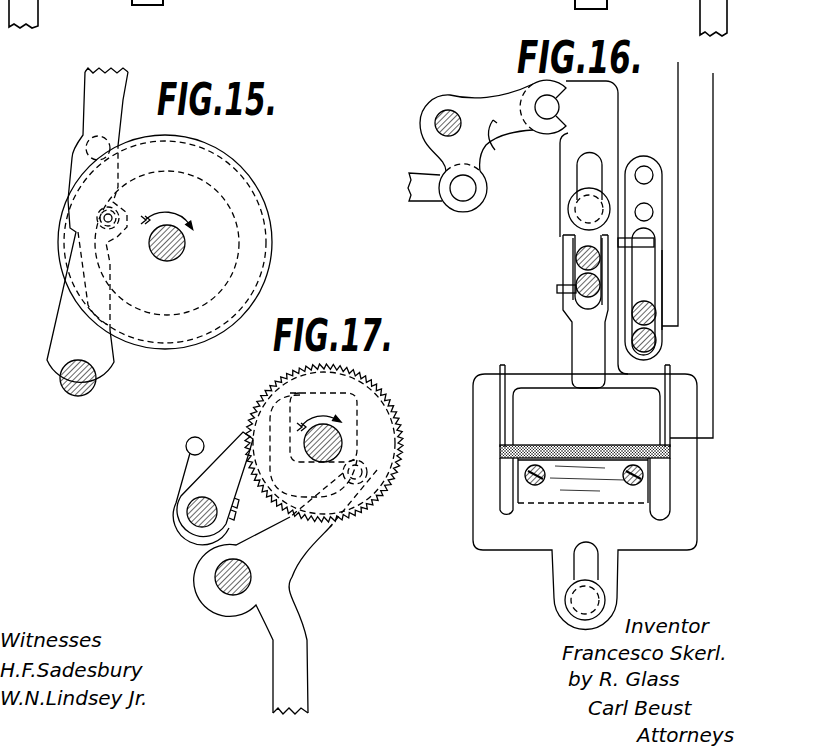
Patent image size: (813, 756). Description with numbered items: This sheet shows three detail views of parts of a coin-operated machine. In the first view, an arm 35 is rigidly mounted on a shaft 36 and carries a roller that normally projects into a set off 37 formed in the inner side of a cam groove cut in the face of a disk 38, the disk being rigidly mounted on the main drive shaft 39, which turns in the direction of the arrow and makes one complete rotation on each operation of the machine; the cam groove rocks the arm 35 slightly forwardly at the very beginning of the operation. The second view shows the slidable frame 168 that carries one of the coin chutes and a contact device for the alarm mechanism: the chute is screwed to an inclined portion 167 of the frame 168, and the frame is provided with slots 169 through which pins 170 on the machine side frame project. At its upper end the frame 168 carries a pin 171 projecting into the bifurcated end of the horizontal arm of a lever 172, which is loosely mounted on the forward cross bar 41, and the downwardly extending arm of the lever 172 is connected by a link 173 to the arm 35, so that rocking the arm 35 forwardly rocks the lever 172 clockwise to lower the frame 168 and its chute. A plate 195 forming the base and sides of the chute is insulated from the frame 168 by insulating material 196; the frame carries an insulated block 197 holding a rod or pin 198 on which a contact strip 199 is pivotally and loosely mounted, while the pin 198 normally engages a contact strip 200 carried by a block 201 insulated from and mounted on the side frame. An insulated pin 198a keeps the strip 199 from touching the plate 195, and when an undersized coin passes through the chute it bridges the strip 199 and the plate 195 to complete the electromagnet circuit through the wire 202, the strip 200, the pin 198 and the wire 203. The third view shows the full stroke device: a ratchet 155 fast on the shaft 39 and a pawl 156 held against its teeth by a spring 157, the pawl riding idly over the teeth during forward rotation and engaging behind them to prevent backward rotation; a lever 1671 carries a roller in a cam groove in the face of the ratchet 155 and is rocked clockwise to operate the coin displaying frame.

In FIG. 15, the arm 35 is at (93, 120).
In FIG. 15, the shaft 36 is at (76, 380).
In FIG. 15, the set off 37 is at (114, 206).
In FIG. 15, the disk 38 is at (268, 283).
In FIG. 15, the main drive shaft 39 is at (185, 248).
In FIG. 17, the main drive shaft 39 is at (340, 440).
In FIG. 17, the ratchet 155 is at (401, 450).
In FIG. 17, the pawl 156 is at (225, 455).
In FIG. 17, the spring 157 is at (188, 462).
In FIG. 17, the lever 1671 is at (287, 627).
In FIG. 16, the cross rod 41 is at (436, 118).
In FIG. 16, the pin 171 is at (559, 108).
In FIG. 16, the lever 172 is at (509, 143).
In FIG. 16, the link 173 is at (430, 190).
In FIG. 16, the slots 169 is at (579, 175).
In FIG. 16, the pins 170 is at (578, 212).
In FIG. 16, the block 197 is at (575, 248).
In FIG. 16, the rod or pin 198 is at (650, 243).
In FIG. 16, the insulated pin 198a is at (558, 290).
In FIG. 16, the contact strip 199 is at (538, 397).
In FIG. 16, the contact strip 200 is at (647, 282).
In FIG. 16, the block 201 is at (662, 257).
In FIG. 16, the wire 202 is at (678, 138).
In FIG. 16, the wire 203 is at (726, 357).
In FIG. 16, the frame 168 is at (678, 538).
In FIG. 16, the insulating material 196 is at (558, 447).
In FIG. 16, the plate 195 is at (632, 445).
In FIG. 16, the inclined portion 167 is at (653, 487).